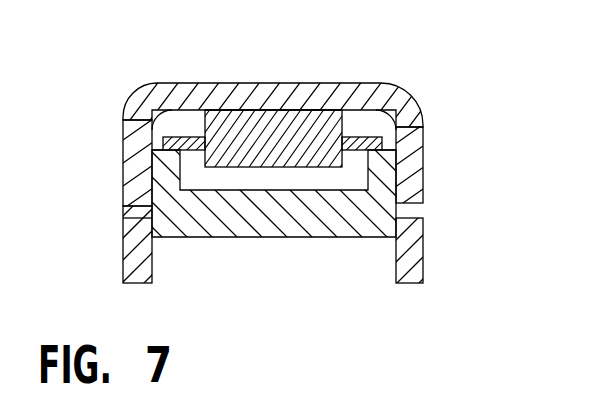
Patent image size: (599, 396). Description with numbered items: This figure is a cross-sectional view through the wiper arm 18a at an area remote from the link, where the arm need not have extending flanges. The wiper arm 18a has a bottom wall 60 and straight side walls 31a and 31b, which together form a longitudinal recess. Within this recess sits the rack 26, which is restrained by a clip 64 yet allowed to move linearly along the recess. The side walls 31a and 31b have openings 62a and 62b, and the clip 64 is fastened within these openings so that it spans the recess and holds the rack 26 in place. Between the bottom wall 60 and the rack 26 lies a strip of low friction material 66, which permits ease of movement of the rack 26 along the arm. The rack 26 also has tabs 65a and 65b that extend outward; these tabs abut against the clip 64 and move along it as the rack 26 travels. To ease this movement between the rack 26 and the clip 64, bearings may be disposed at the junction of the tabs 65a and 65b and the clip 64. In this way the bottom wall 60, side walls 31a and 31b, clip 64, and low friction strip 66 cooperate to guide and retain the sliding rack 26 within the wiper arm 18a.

The wiper arm 18a is at (419, 72).
The rack 26 is at (247, 124).
The side wall 31a is at (462, 149).
The side wall 31b is at (123, 150).
The bottom wall 60 is at (183, 83).
The opening 62a is at (420, 209).
The opening 62b is at (123, 212).
The clip 64 is at (260, 227).
The tab 65a is at (418, 100).
The tab 65b is at (126, 122).
The strip of low friction material 66 is at (300, 114).